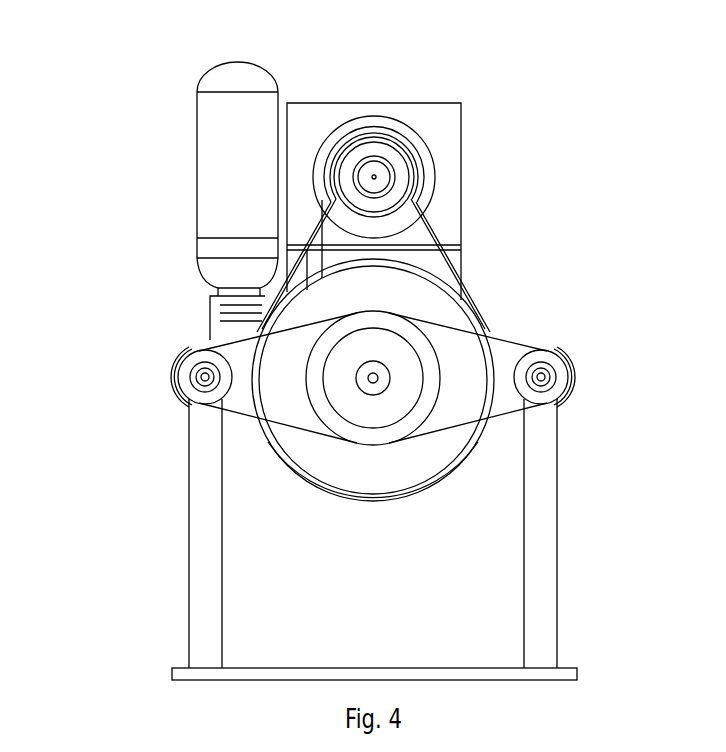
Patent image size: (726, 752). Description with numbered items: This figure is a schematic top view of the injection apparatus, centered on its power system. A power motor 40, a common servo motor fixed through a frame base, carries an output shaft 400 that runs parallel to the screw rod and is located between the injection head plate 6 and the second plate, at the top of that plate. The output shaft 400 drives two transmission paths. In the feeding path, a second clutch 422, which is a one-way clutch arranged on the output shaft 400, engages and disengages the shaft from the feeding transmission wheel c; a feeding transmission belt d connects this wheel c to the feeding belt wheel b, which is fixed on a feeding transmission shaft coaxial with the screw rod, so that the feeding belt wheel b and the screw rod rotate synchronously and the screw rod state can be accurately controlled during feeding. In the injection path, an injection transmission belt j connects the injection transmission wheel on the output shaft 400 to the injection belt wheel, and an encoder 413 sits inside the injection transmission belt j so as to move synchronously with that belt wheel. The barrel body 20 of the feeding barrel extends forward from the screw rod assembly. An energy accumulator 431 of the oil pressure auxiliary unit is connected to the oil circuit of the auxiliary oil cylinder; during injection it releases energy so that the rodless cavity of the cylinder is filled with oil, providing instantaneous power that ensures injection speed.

The energy accumulator 431 is at (220, 115).
The encoder 413 is at (285, 240).
The power motor 40 is at (447, 128).
The output shaft 400 is at (380, 153).
The second clutch 422 is at (368, 153).
The feeding transmission wheel c is at (400, 176).
The feeding transmission belt d is at (398, 227).
The feeding belt wheel b is at (448, 302).
The injection transmission belt j is at (322, 233).
The barrel body 20 is at (343, 398).
The injection head plate 6 is at (490, 392).